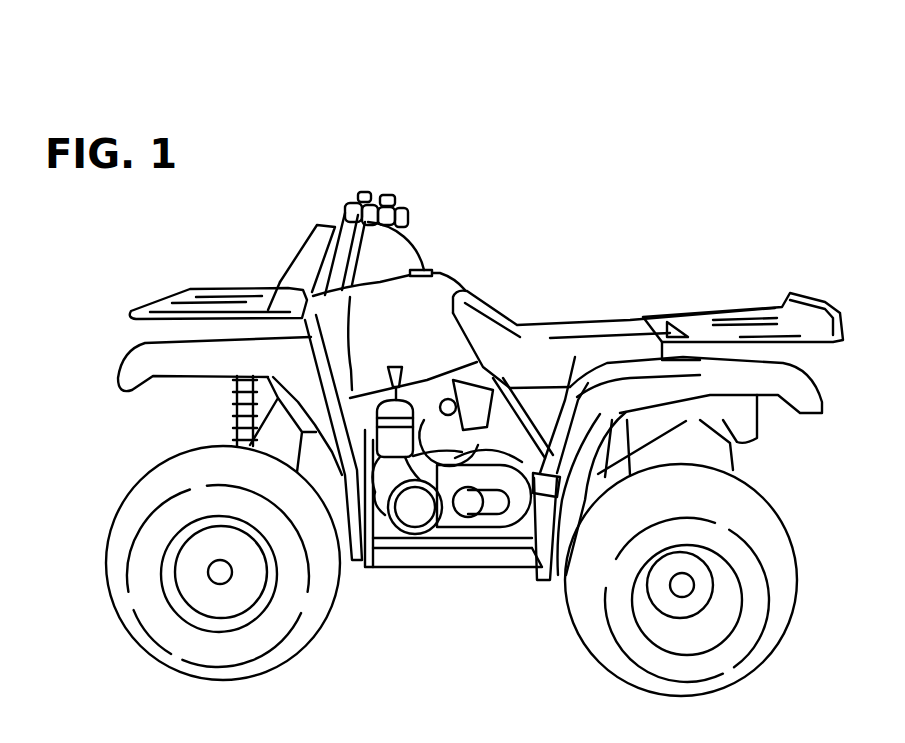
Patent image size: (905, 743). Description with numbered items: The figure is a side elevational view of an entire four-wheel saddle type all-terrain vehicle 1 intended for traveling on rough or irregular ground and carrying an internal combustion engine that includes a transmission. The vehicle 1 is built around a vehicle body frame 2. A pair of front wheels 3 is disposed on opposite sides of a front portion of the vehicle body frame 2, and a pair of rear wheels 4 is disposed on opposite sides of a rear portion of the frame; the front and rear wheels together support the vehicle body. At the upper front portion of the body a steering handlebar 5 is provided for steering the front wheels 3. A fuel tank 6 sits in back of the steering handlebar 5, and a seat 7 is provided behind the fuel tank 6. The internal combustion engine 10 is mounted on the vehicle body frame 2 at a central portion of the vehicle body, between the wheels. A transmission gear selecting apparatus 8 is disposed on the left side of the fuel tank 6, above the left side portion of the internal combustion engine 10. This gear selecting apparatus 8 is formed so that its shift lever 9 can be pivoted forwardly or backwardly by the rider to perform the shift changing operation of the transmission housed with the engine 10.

The all-terrain vehicle 1 is at (519, 152).
The vehicle body frame 2 is at (580, 545).
The front wheels 3 is at (108, 563).
The rear wheels 4 is at (797, 571).
The steering handlebar 5 is at (378, 203).
The fuel tank 6 is at (447, 273).
The seat 7 is at (606, 318).
The transmission gear selecting apparatus 8 is at (372, 372).
The shift lever 9 is at (398, 368).
The internal combustion engine 10 is at (440, 552).